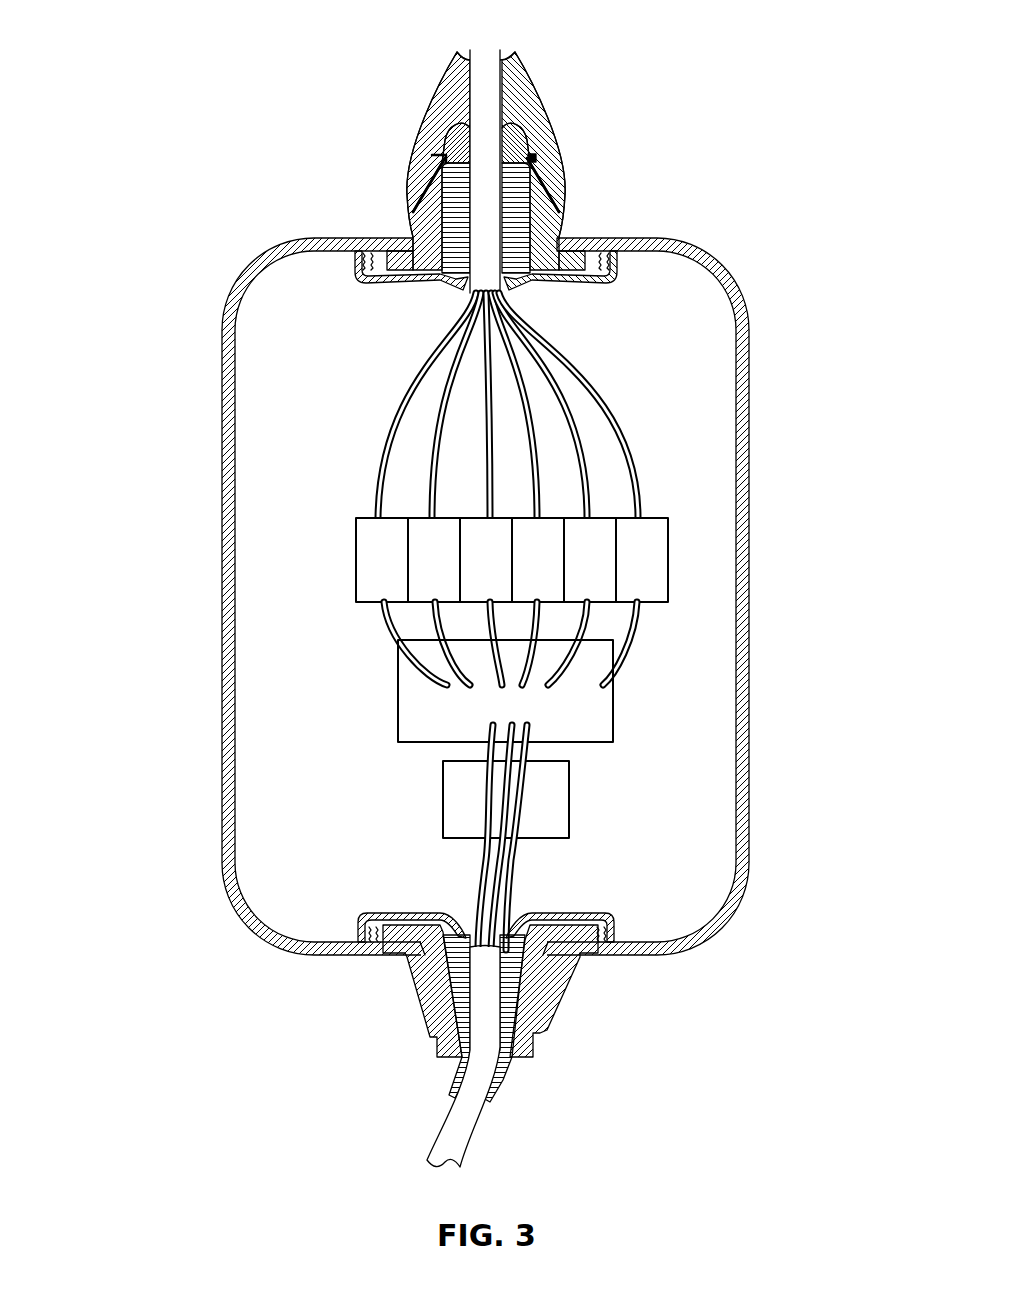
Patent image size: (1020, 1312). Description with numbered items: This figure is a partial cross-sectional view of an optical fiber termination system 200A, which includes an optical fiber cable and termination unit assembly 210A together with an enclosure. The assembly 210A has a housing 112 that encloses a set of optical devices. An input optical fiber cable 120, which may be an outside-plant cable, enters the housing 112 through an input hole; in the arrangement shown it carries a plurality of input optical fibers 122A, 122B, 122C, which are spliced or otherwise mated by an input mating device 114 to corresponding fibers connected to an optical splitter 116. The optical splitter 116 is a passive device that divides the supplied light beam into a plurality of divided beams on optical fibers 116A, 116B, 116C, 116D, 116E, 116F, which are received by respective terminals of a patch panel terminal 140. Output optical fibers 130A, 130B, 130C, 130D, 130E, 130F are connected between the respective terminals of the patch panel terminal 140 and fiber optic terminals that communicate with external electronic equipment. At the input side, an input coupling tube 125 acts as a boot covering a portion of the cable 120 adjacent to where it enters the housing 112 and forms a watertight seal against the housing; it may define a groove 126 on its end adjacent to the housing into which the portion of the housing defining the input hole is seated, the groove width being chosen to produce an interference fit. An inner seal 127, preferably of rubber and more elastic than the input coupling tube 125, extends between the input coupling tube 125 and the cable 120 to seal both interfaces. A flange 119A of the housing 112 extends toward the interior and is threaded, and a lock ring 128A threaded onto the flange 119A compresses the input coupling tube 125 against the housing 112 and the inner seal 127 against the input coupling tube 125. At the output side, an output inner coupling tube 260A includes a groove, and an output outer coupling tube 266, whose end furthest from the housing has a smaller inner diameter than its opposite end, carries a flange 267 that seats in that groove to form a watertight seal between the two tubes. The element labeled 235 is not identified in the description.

The optical fiber termination system 200A is at (258, 80).
The optical fibers 235 is at (485, 82).
The output outer coupling tube 266 is at (527, 118).
The flange 267 is at (534, 158).
The output inner coupling tube 260A is at (540, 210).
The optical fiber cable and termination unit assembly 210A is at (195, 348).
The output optical fiber 130A is at (380, 438).
The output optical fiber 130B is at (431, 490).
The output optical fiber 130C is at (482, 358).
The output optical fiber 130D is at (520, 362).
The output optical fiber 130E is at (572, 393).
The output optical fiber 130F is at (635, 457).
The patch panel terminal 140 is at (330, 557).
The optical fiber 116A is at (386, 606).
The optical fiber 116B is at (438, 651).
The optical fiber 116C is at (547, 611).
The optical fiber 116D is at (538, 628).
The optical fiber 116E is at (578, 647).
The optical fiber 116F is at (615, 671).
The optical splitter 116 is at (420, 703).
The input mating device 114 is at (455, 798).
The housing 112 is at (234, 887).
The input optical fiber 122A is at (476, 886).
The input optical fiber 122B is at (514, 877).
The input optical fiber 122C is at (520, 854).
The input coupling tube 125 is at (412, 1015).
The groove 126 is at (568, 953).
The inner seal 127 is at (505, 1012).
The lock ring 128A is at (355, 948).
The flange 119A is at (603, 932).
The input optical fiber cable 120 is at (420, 1135).